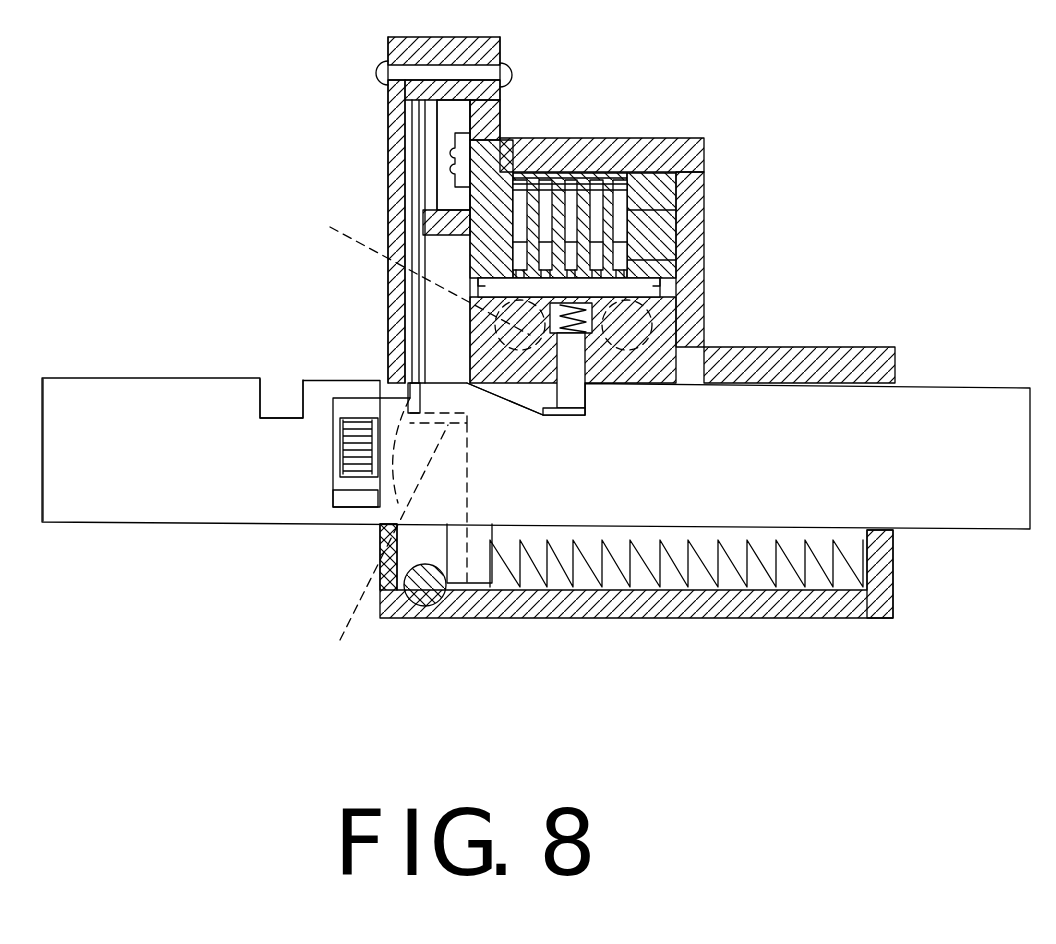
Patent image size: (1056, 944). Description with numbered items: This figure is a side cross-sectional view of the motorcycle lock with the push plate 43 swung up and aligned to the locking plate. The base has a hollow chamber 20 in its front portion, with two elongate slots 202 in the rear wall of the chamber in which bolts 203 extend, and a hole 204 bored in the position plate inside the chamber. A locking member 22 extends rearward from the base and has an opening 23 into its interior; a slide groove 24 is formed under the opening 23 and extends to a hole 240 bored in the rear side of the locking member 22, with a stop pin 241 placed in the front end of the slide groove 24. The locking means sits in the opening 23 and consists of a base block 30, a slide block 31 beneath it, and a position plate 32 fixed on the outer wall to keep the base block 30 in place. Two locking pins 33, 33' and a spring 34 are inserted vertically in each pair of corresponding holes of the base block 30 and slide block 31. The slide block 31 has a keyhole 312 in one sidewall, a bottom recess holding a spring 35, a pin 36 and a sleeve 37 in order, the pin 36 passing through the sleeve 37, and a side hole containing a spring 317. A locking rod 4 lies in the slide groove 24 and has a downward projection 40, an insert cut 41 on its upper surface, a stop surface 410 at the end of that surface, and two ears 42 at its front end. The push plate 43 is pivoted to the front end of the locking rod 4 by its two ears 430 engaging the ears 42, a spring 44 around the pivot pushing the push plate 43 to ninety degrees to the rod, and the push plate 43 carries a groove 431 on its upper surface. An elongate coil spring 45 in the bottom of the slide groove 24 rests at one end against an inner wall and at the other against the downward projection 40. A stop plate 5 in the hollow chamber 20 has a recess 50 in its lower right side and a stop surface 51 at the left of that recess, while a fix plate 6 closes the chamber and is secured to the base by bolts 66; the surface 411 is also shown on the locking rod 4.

The locking rod 4 is at (950, 405).
The push plate 43 is at (88, 400).
The groove 431 is at (283, 405).
The ears 430 is at (347, 513).
The spring 44 is at (340, 448).
The ears 42 is at (342, 490).
The slide groove 24 is at (763, 597).
The hole 240 is at (893, 533).
The stop pin 241 is at (410, 613).
The elongate coil spring 45 is at (700, 570).
The downward projection 40 is at (478, 570).
The hole 204 is at (379, 534).
The inclined surface 411 is at (508, 405).
The insert cut 41 is at (527, 390).
The stop surface 410 is at (585, 410).
The recess 50 is at (385, 357).
The stop surface 51 is at (385, 528).
The locking member 22 is at (665, 138).
The bolts 66 is at (375, 72).
The fix plate 6 is at (388, 98).
The stop plate 5 is at (418, 128).
The hollow chamber 20 is at (437, 260).
The elongate slots 202 is at (433, 222).
The bolts 203 is at (448, 135).
The position plate 32 is at (470, 143).
The opening 23 is at (587, 173).
The spring 34 is at (630, 175).
The base block 30 is at (657, 192).
The locking pin 33 is at (700, 230).
The locking pin 33' is at (631, 209).
The slide block 31 is at (650, 277).
The keyhole 312 is at (648, 276).
The spring 317 is at (405, 270).
The spring 35 is at (550, 357).
The pin 36 is at (550, 368).
The sleeve 37 is at (545, 376).